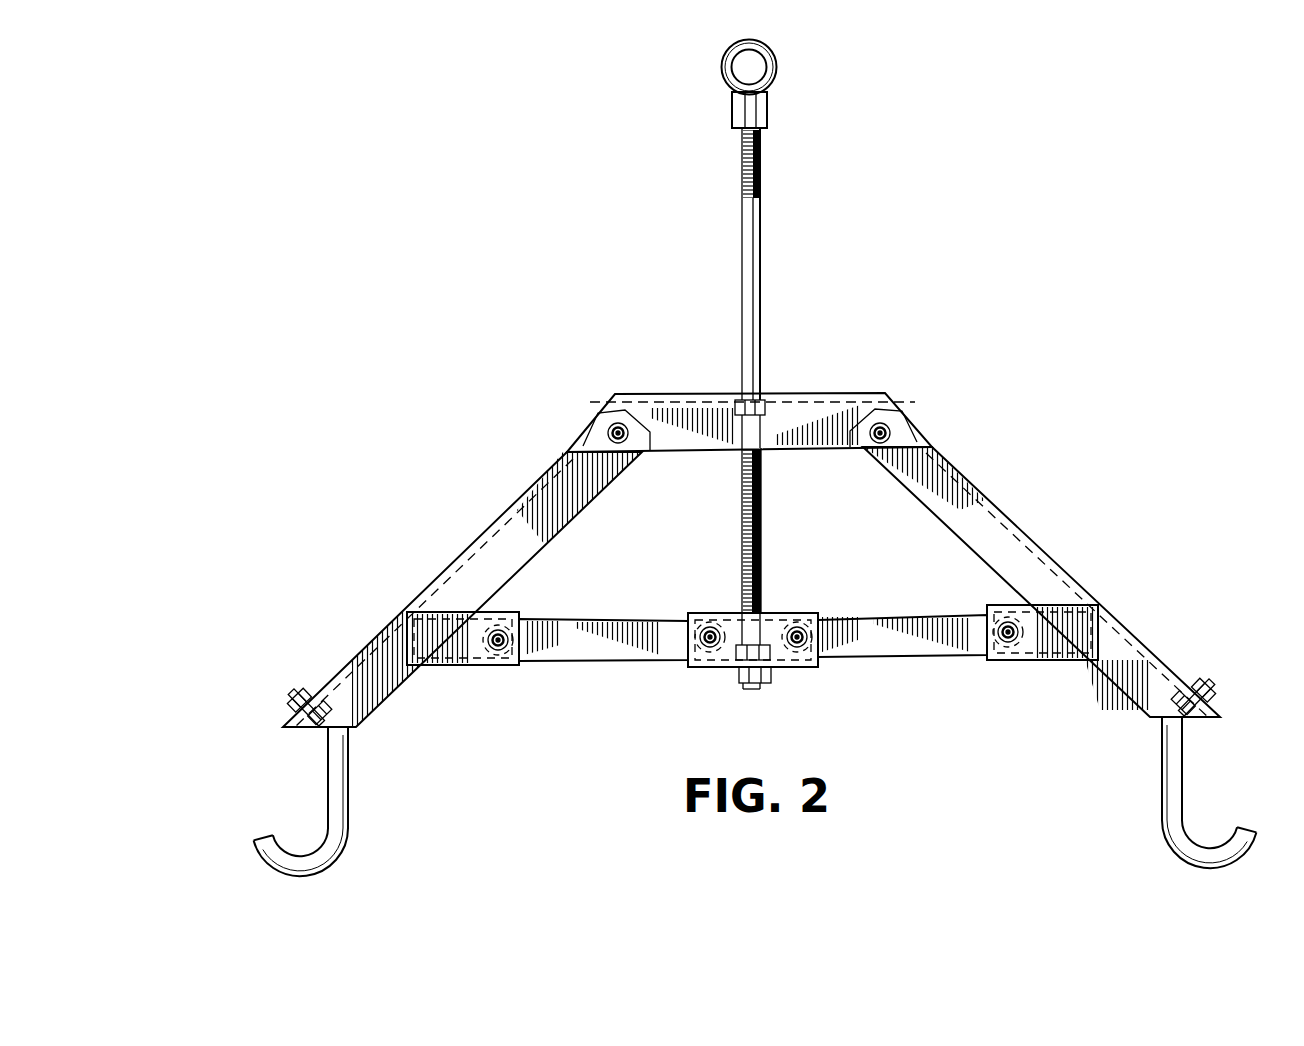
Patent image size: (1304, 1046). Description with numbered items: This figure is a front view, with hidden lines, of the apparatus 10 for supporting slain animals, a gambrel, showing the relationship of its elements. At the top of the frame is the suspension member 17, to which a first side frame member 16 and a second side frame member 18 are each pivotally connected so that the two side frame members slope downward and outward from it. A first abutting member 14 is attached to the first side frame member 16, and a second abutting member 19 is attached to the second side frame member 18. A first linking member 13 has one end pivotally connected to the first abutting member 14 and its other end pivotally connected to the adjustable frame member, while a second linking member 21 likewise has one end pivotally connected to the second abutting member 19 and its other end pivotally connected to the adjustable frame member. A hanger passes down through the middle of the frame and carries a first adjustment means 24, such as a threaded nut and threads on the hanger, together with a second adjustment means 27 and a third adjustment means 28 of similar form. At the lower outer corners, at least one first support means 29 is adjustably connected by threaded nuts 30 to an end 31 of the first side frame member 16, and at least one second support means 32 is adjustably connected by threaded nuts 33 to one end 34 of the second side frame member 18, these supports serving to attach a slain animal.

The apparatus 10 is at (756, 458).
The first linking member 13 is at (910, 655).
The first abutting member 14 is at (1050, 660).
The first side frame member 16 is at (1042, 543).
The suspension member 17 is at (850, 393).
The second side frame member 18 is at (465, 547).
The second abutting member 19 is at (455, 667).
The second linking member 21 is at (606, 664).
The first adjustment means 24 is at (765, 108).
The second adjustment means 27 is at (778, 398).
The third adjustment means 28 is at (738, 673).
The first support means 29 is at (1187, 783).
The threaded nuts 30 is at (1196, 682).
The end of the first side frame member 31 is at (1220, 708).
The second support means 32 is at (352, 795).
The threaded nuts 33 is at (313, 687).
The end of the second side frame member 34 is at (287, 724).